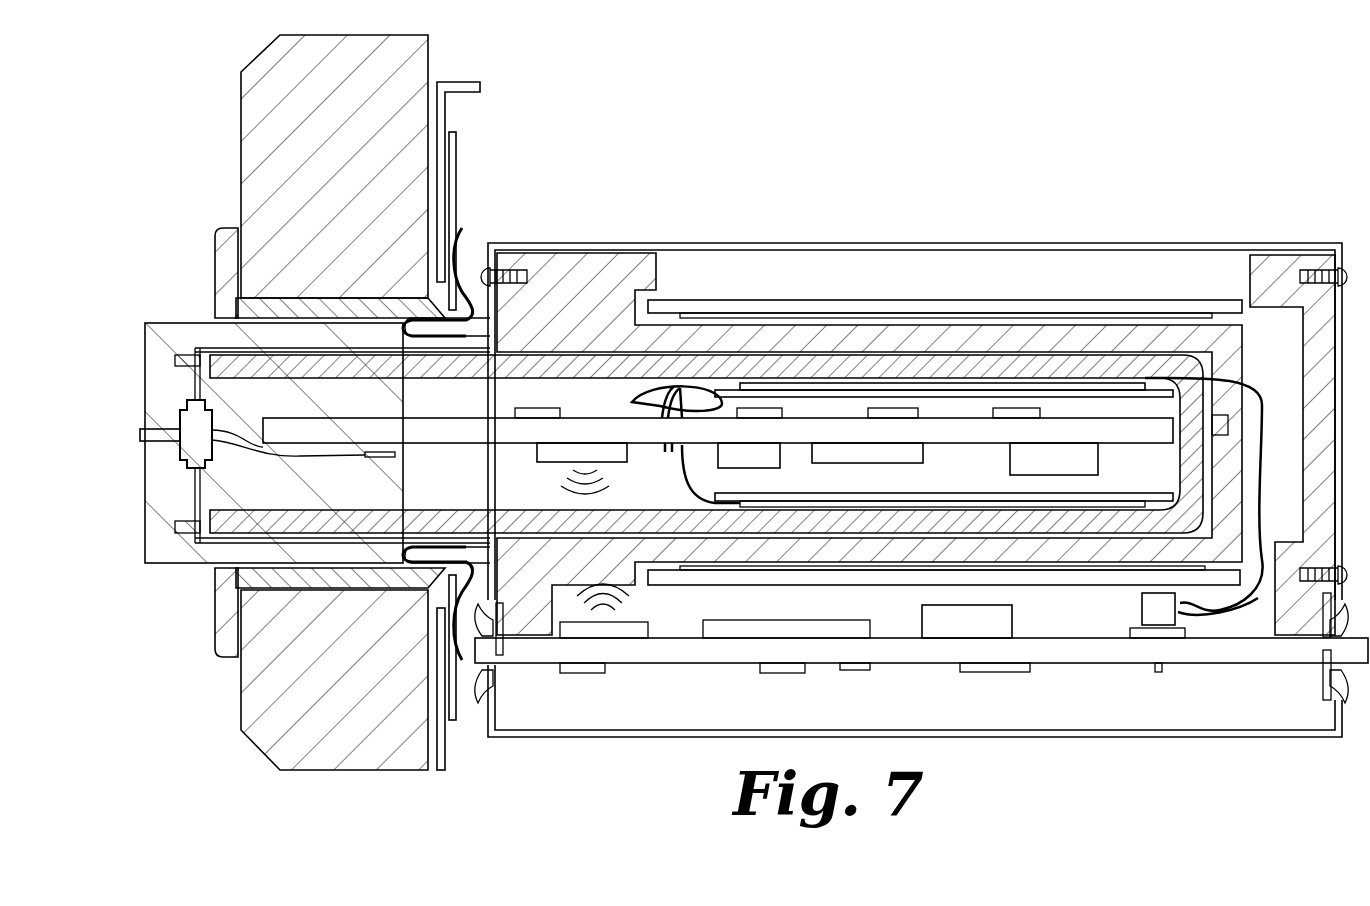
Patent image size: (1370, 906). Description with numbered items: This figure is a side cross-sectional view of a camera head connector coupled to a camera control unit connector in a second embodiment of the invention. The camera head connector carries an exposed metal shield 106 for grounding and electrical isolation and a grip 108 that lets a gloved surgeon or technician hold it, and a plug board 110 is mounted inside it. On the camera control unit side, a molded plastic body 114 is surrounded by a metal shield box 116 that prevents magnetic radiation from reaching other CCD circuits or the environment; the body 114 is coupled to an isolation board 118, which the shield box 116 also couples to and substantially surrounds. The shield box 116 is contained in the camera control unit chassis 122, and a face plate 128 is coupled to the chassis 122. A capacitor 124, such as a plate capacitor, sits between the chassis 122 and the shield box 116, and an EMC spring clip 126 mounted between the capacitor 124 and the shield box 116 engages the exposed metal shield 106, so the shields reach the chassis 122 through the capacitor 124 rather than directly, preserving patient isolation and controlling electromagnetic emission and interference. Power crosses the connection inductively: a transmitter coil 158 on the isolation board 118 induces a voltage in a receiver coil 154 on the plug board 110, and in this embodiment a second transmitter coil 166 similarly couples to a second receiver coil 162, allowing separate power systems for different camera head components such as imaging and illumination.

The exposed metal shield 106 is at (400, 540).
The grip 108 is at (262, 548).
The plug board 110 is at (497, 432).
The body 114 is at (1250, 275).
The shield box 116 is at (583, 250).
The isolation board 118 is at (693, 652).
The camera control unit chassis 122 is at (443, 100).
The capacitor 124 is at (455, 140).
The EMC spring clip 126 is at (462, 230).
The face plate 128 is at (415, 60).
The receiver coil 154 is at (1078, 385).
The transmitter coil 158 is at (917, 305).
The second receiver coil 162 is at (1056, 500).
The second transmitter coil 166 is at (1106, 578).